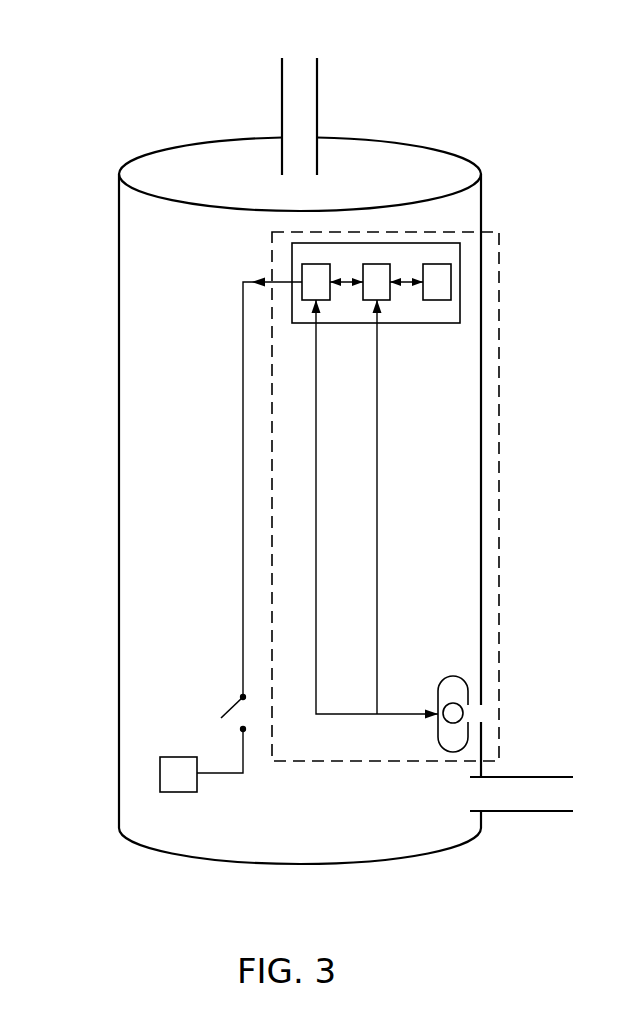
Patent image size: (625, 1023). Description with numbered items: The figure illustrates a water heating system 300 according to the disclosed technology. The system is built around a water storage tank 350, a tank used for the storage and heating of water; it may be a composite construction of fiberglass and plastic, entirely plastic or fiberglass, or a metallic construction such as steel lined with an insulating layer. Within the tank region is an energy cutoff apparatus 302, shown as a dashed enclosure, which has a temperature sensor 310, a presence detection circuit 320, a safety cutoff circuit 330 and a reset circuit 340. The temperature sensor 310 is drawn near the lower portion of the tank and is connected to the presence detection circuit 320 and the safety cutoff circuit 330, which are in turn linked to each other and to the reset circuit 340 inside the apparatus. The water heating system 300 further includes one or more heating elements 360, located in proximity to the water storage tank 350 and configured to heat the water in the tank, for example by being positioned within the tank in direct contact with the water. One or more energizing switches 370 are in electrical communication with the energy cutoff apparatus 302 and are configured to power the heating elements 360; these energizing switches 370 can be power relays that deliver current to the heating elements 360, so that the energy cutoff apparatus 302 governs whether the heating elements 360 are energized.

The water heating system 300 is at (164, 41).
The energy cutoff apparatus 302 is at (499, 497).
The temperature sensor 310 is at (463, 713).
The presence detection circuit 320 is at (318, 264).
The safety cutoff circuit 330 is at (377, 264).
The reset circuit 340 is at (432, 264).
The water storage tank 350 is at (119, 344).
The heating elements 360 is at (160, 773).
The energizing switches 370 is at (222, 697).